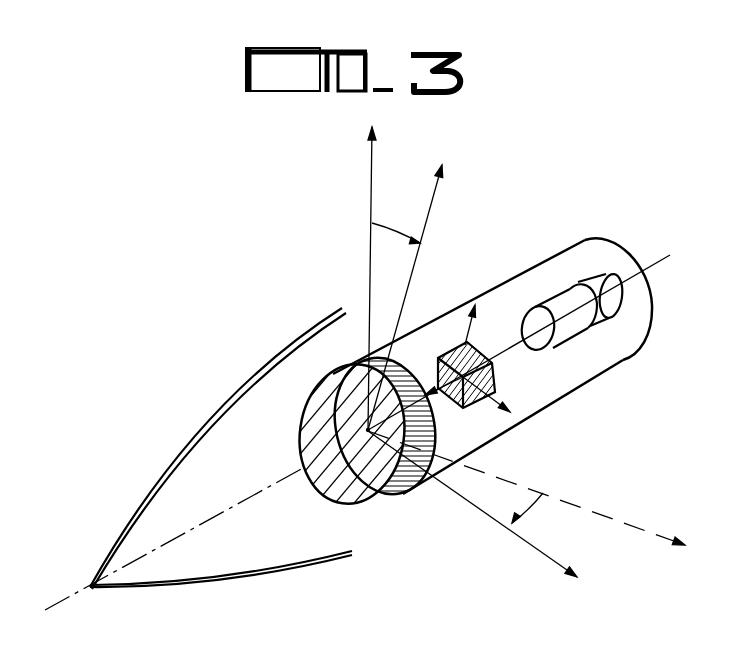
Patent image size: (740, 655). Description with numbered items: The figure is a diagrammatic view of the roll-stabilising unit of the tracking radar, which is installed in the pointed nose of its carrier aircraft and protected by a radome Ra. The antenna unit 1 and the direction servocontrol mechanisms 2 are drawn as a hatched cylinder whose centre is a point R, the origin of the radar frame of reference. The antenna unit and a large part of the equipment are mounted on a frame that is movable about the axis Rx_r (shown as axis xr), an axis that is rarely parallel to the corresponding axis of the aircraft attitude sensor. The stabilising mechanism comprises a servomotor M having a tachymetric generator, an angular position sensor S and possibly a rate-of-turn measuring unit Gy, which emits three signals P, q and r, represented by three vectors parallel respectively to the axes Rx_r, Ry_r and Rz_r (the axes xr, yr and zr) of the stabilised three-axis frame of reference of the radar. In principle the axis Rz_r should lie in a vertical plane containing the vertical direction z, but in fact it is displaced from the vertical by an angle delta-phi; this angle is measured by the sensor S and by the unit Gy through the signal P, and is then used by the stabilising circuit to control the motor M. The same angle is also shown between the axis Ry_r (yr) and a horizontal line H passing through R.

The point R is at (368, 447).
The radome Ra is at (217, 418).
The antenna unit 1 is at (350, 448).
The direction servocontrol mechanisms 2 is at (415, 492).
The rate-of-turn measuring unit Gy is at (497, 380).
The angular position sensor S is at (566, 332).
The servomotor M is at (609, 307).
The signal p P is at (444, 401).
The signal q is at (486, 402).
The signal r is at (480, 320).
The horizontal line H is at (526, 488).
The vertical z is at (381, 274).
The axis Rz_r zr is at (423, 297).
The axis Ry_r yr is at (488, 516).
The axis Rx_r xr is at (174, 539).